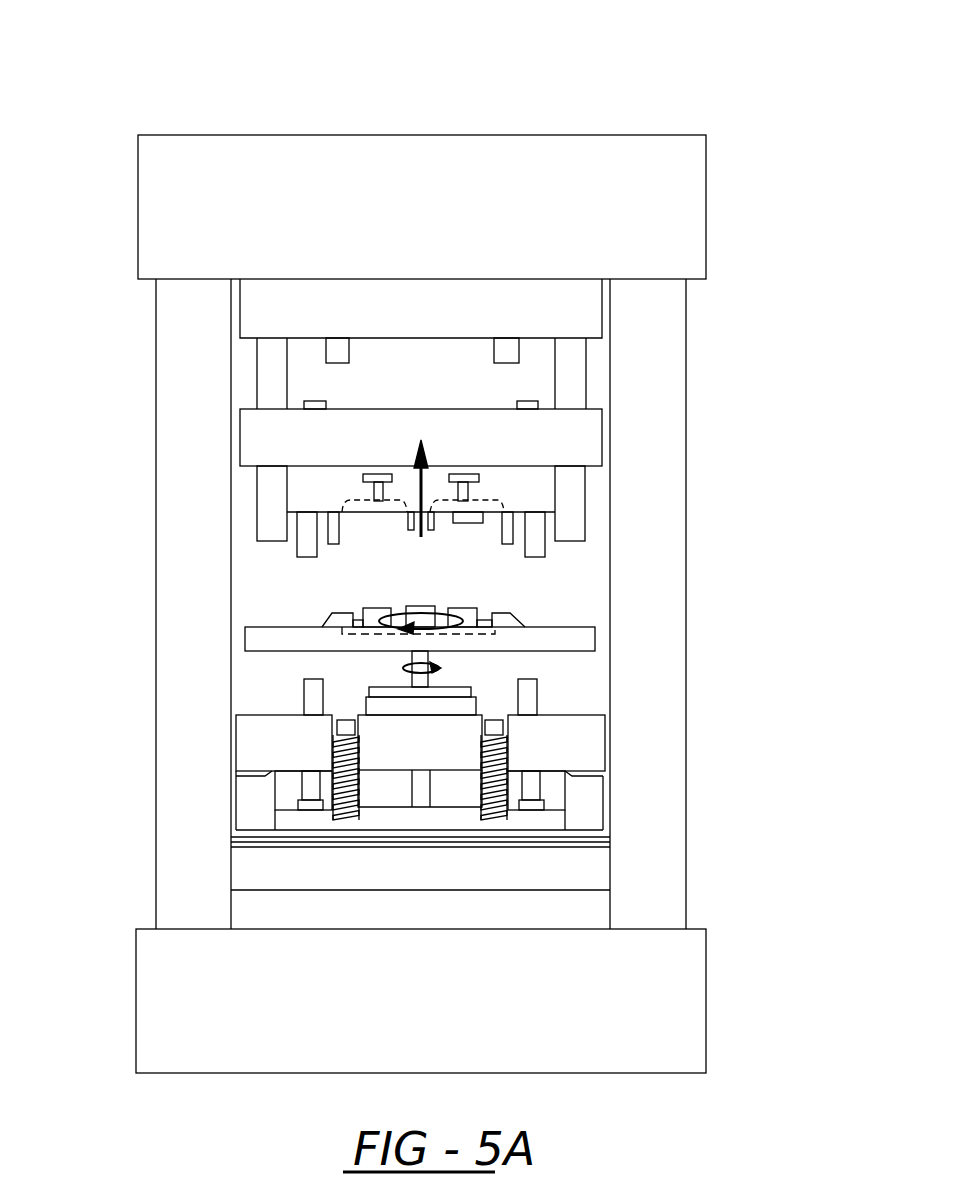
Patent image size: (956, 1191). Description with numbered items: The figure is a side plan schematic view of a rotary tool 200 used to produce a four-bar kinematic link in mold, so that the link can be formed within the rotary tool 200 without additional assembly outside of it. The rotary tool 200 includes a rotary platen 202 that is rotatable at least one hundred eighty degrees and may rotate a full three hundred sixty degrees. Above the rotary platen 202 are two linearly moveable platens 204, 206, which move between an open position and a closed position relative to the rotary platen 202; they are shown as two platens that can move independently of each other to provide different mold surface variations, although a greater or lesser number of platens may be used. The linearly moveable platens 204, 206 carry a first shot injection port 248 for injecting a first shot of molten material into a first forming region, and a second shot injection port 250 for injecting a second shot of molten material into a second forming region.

The rotary tool 200 is at (100, 103).
The rotary platen 202 is at (583, 640).
The linearly moveable platen 204 is at (539, 495).
The linearly moveable platen 206 is at (592, 452).
The first shot injection port 248 is at (468, 493).
The second shot injection port 250 is at (374, 492).